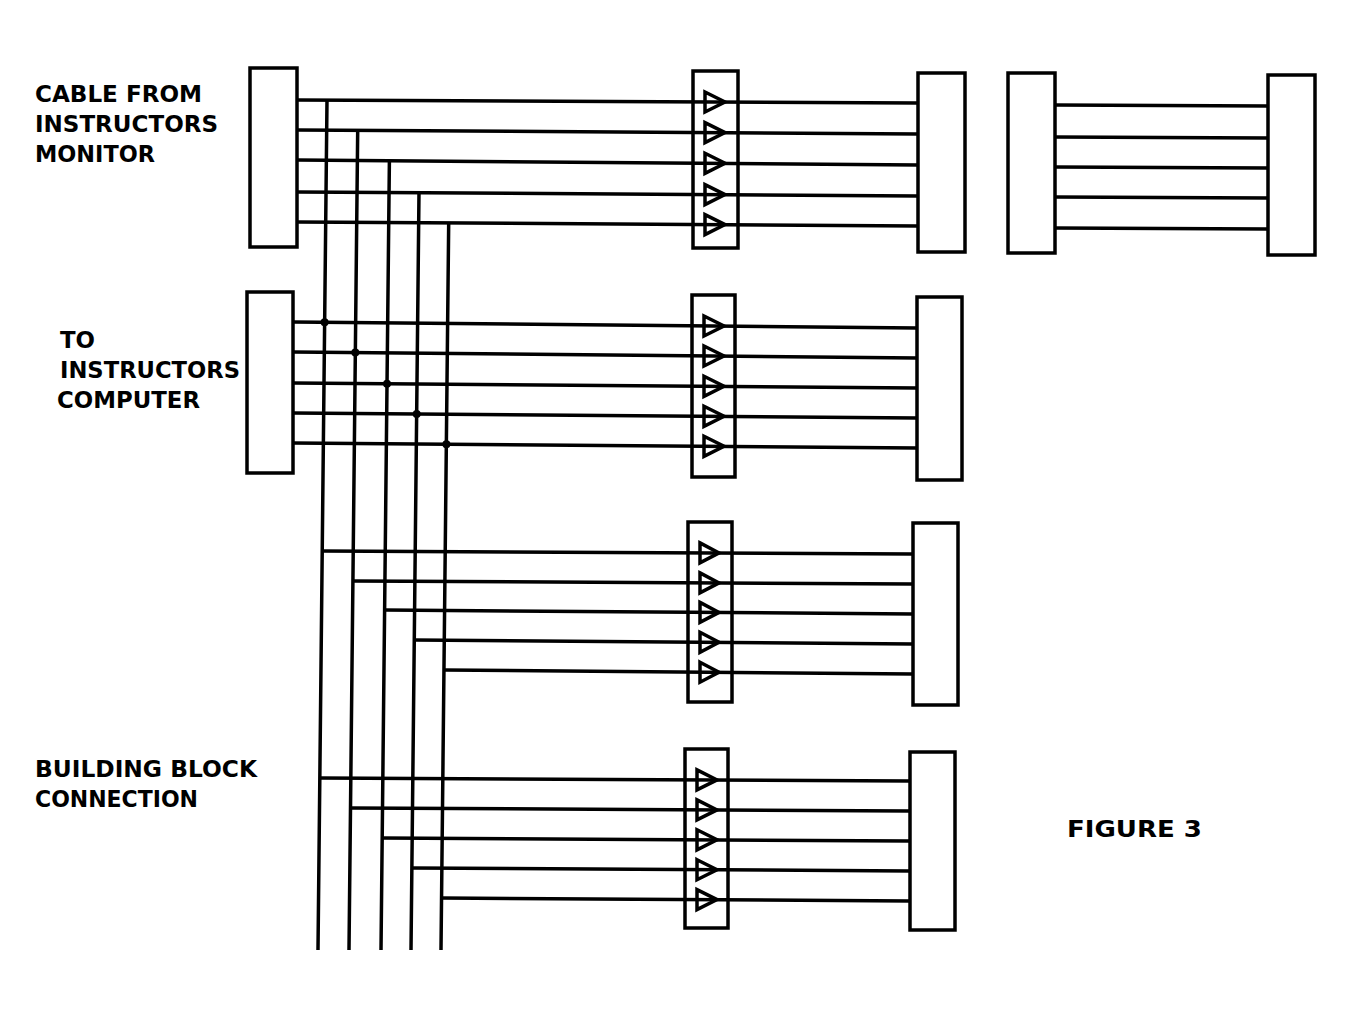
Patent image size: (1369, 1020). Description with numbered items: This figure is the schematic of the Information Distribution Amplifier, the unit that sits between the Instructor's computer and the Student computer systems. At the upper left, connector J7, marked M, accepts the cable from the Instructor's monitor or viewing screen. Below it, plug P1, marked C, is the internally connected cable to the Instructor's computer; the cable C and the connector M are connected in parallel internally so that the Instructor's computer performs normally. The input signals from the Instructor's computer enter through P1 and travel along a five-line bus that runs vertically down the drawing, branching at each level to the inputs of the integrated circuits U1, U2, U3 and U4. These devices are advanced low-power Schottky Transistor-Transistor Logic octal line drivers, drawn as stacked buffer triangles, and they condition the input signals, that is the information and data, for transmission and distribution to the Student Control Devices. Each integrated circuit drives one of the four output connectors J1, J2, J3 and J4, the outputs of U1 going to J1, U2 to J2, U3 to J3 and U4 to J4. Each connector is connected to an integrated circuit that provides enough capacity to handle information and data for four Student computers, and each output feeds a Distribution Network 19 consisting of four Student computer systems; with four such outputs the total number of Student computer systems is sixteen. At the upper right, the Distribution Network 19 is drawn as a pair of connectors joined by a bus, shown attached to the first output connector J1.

The connector J7 is at (273, 142).
The monitor connector marking M is at (273, 155).
The plug P1 is at (270, 398).
The internally connected cable C is at (252, 398).
The integrated circuit U1 is at (715, 144).
The integrated circuit U2 is at (713, 372).
The integrated circuit U3 is at (710, 597).
The integrated circuit U4 is at (706, 826).
The output connector J1 is at (941, 147).
The output connector J2 is at (939, 374).
The output connector J3 is at (935, 599).
The output connector J4 is at (932, 827).
The distribution network 19 is at (1173, 149).